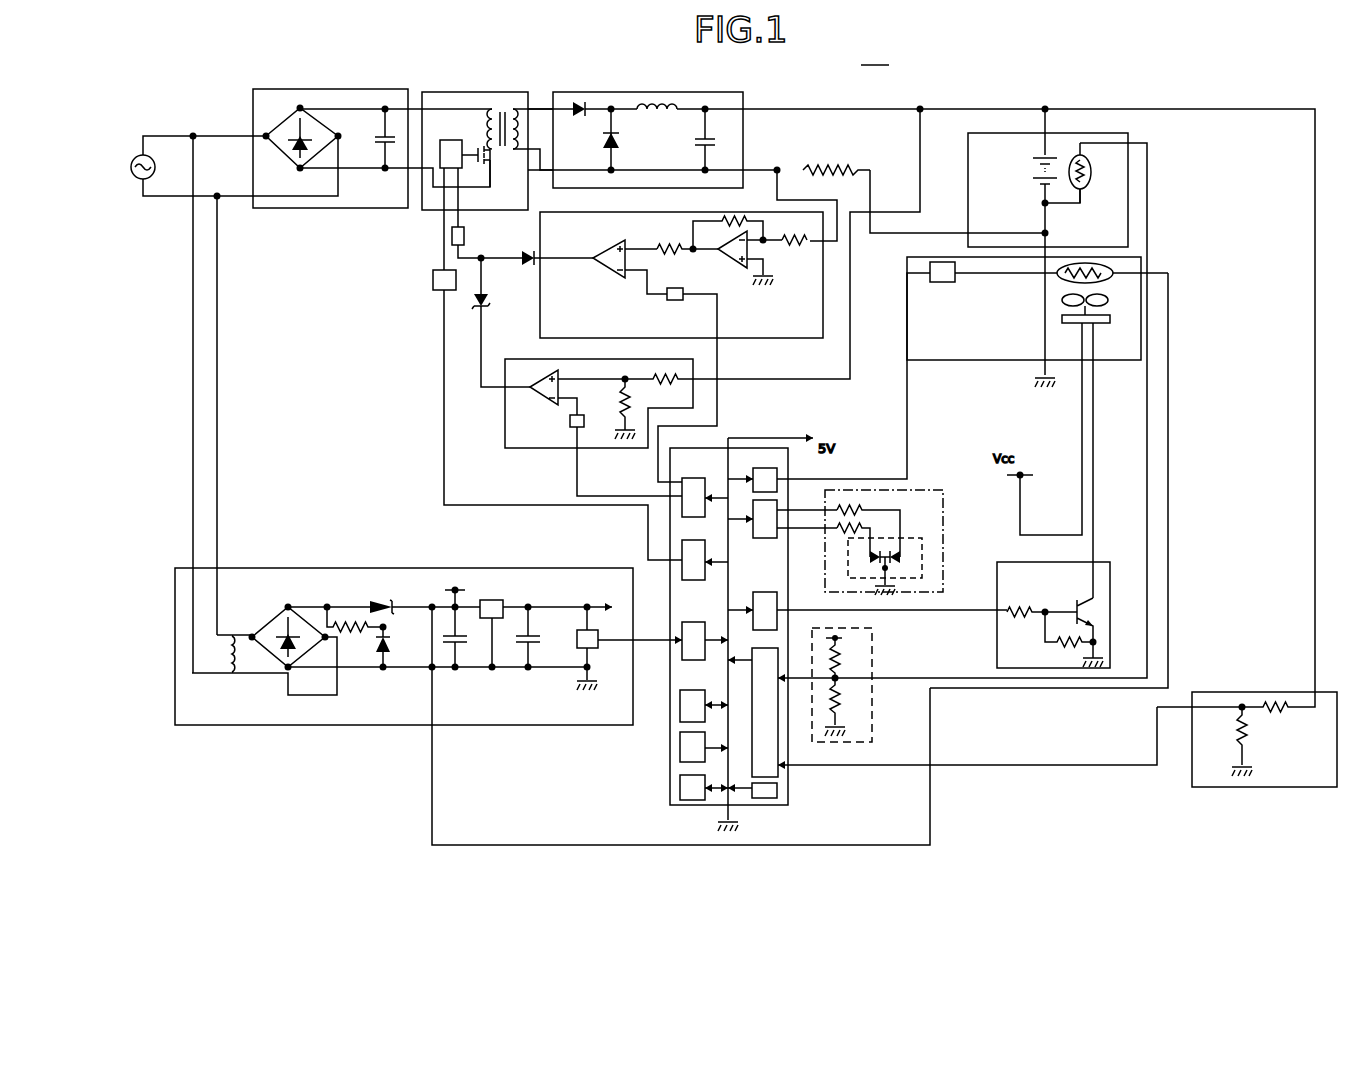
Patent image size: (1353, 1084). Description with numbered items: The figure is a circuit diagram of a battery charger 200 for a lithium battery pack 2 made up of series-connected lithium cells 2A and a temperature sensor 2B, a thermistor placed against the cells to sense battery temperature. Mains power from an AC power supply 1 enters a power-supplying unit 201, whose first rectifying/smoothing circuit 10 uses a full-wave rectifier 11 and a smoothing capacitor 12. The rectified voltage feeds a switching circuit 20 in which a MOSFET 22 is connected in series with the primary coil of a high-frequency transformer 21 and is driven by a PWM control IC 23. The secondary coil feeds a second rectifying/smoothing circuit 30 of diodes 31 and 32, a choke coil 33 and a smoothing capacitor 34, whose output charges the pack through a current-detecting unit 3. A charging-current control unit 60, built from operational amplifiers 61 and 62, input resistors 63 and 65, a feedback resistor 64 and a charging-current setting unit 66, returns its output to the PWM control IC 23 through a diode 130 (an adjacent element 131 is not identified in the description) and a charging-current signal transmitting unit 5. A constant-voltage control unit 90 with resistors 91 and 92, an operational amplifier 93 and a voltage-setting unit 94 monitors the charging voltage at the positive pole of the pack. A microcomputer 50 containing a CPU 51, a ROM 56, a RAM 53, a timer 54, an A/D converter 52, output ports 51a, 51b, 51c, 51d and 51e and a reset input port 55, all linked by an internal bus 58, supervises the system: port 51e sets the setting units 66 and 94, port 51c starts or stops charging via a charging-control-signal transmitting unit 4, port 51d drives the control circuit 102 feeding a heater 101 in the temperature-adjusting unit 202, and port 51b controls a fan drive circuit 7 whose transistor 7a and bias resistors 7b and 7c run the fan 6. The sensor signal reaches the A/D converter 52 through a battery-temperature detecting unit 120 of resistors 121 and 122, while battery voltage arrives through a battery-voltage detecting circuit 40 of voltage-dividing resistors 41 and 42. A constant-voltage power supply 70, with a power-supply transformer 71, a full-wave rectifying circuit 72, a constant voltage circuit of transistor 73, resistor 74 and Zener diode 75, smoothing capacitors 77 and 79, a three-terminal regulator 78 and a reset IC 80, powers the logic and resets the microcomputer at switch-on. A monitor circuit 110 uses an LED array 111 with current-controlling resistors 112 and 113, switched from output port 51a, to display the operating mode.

The AC power supply 1 is at (153, 163).
The first rectifying/smoothing circuit 10 is at (352, 76).
The full-wave rectifier 11 is at (281, 125).
The smoothing capacitor 12 is at (378, 135).
The switching circuit 20 is at (446, 90).
The high-frequency transformer 21 is at (504, 112).
The MOSFET 22 is at (492, 158).
The PWM control IC 23 is at (457, 139).
The second rectifying/smoothing circuit 30 is at (639, 92).
The diode 31 is at (582, 117).
The diode 32 is at (615, 142).
The choke coil 33 is at (655, 110).
The smoothing capacitor 34 is at (693, 140).
The current-detecting unit 3 is at (833, 162).
The charging-control-signal transmitting unit 4 is at (431, 268).
The charging-current signal transmitting unit 5 is at (465, 237).
The diode 130 is at (523, 267).
The zener diode 131 is at (490, 298).
The charging-current control unit 60 is at (539, 239).
The operational amplifier 61 is at (735, 267).
The operational amplifier 62 is at (607, 272).
The input resistor 63 is at (790, 238).
The feedback resistor 64 is at (725, 222).
The input resistor 65 is at (668, 237).
The charging-current setting unit 66 is at (670, 301).
The constant-voltage control unit 90 is at (532, 355).
The resistor 91 is at (665, 385).
The resistor 92 is at (622, 411).
The operational amplifier 93 is at (535, 382).
The voltage-setting unit 94 is at (567, 423).
The microcomputer 50 is at (717, 447).
The central processing unit 51 is at (680, 705).
The output port 51a is at (766, 539).
The output port 51b is at (768, 592).
The output port 51c is at (697, 540).
The output port 51d is at (762, 470).
The output port 51e is at (697, 478).
The A/D converter 52 is at (768, 643).
The random access memory 53 is at (680, 790).
The timer 54 is at (772, 793).
The reset input port 55 is at (694, 661).
The read only memory 56 is at (680, 748).
The internal bus 58 is at (725, 605).
The monitor circuit 110 is at (925, 490).
The light-emitting diode array 111 is at (910, 538).
The resistor 112 is at (858, 512).
The resistor 113 is at (850, 530).
The battery-temperature detecting unit 120 is at (873, 662).
The resistor 121 is at (846, 660).
The resistor 122 is at (838, 700).
The lithium battery pack 2 is at (1128, 133).
The rechargeable lithium cells 2A is at (1035, 182).
The temperature sensor 2B is at (1090, 167).
The temperature-adjusting unit 202 is at (968, 362).
The heater 101 is at (1107, 282).
The control circuit 102 is at (957, 282).
The fan 6 is at (1102, 325).
The fan drive circuit 7 is at (997, 573).
The transistor 7a is at (1075, 605).
The bias resistor 7b is at (1015, 605).
The bias resistor 7c is at (1060, 647).
The battery-voltage detecting circuit 40 is at (1192, 787).
The voltage-dividing resistor 41 is at (1272, 713).
The voltage-dividing resistor 42 is at (1233, 732).
The constant-voltage power supply 70 is at (322, 556).
The power-supply transformer 71 is at (233, 635).
The full-wave rectifying circuit 72 is at (275, 617).
The transistor 73 is at (385, 606).
The resistor 74 is at (357, 633).
The Zener diode 75 is at (388, 643).
The smoothing capacitor 77 is at (468, 641).
The three-terminal regulator 78 is at (502, 597).
The smoothing capacitor 79 is at (542, 642).
The reset IC 80 is at (598, 645).
The battery charger 200 is at (876, 57).
The power-supplying unit 201 is at (542, 87).